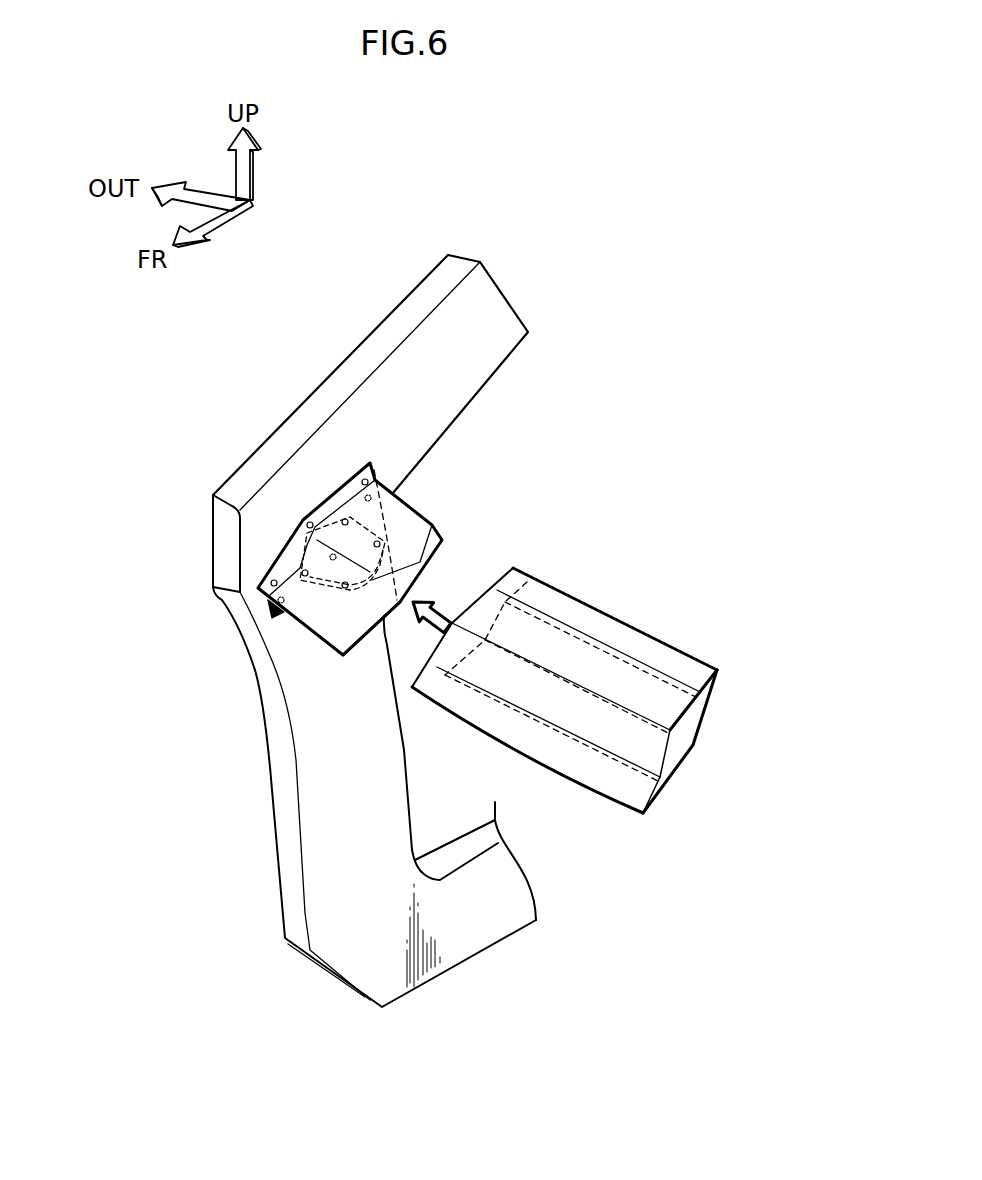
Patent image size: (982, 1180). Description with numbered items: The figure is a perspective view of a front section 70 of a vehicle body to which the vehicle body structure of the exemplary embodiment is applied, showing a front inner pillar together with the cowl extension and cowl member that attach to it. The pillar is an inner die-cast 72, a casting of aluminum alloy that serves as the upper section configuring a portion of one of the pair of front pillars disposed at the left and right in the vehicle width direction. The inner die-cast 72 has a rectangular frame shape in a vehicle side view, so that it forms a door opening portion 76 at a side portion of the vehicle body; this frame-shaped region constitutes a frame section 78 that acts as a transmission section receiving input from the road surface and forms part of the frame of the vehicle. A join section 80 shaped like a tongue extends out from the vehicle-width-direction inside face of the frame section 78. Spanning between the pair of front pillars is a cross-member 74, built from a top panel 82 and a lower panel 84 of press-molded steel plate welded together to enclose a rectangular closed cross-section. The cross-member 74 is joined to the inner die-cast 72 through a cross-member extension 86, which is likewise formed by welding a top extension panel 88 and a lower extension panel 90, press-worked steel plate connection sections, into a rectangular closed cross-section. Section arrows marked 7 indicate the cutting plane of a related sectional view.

The center pillar 70 is at (177, 750).
The pillar outer wall 72 is at (288, 416).
The reinforcement channel member 74 is at (647, 630).
The cutout portion 76 is at (451, 835).
The pillar front wall 78 is at (425, 393).
The hidden reinforcement line 80 is at (338, 533).
The channel web 82 is at (553, 653).
The channel end flange 84 is at (697, 710).
The mounting plate 86 is at (428, 518).
The seat portion 88 is at (310, 618).
The plate lower flange 90 is at (372, 612).
The section line of FIG. 7 is at (207, 453).